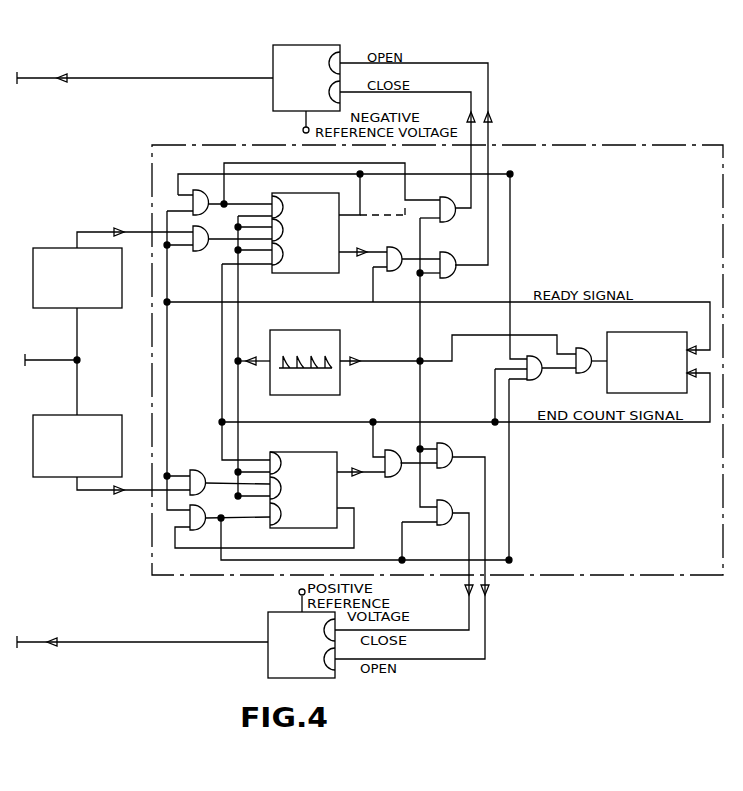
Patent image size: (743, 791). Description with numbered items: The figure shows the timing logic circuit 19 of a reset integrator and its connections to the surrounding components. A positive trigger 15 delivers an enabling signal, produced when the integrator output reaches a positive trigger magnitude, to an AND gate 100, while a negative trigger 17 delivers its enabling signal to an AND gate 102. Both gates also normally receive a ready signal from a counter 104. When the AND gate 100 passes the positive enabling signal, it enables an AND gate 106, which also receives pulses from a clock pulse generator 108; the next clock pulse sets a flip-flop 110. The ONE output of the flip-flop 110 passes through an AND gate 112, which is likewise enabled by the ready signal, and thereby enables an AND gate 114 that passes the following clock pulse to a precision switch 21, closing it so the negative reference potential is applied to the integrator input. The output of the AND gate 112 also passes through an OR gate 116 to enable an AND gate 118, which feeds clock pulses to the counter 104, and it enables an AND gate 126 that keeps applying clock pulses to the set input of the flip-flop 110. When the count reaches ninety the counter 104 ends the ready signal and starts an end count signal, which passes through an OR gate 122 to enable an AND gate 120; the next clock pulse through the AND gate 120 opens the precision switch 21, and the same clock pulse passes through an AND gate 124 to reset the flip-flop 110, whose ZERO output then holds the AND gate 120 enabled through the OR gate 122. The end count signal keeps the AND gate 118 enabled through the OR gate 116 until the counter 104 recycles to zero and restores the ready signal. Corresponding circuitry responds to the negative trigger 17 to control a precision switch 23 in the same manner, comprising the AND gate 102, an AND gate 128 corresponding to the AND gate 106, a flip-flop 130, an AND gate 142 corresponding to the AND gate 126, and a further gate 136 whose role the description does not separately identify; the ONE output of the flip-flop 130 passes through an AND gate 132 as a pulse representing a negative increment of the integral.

The positive trigger 15 is at (101, 308).
The negative trigger 17 is at (98, 420).
The timing logic circuit 19 is at (148, 550).
The precision switch 21 is at (278, 90).
The precision switch 23 is at (273, 658).
The AND gate 100 is at (219, 251).
The AND gate 102 is at (197, 470).
The counter 104 is at (645, 337).
The AND gate 106 is at (284, 232).
The clock pulse generator 108 is at (313, 390).
The flip-flop 110 is at (325, 270).
The AND gate 112 is at (219, 210).
The AND gate 114 is at (454, 213).
The OR gate 116 is at (535, 381).
The AND gate 118 is at (585, 347).
The AND gate 120 is at (448, 270).
The OR gate 122 is at (392, 269).
The AND gate 124 is at (278, 268).
The AND gate 126 is at (283, 205).
The AND gate 128 is at (276, 498).
The flip-flop 130 is at (307, 455).
The AND gate 132 is at (199, 510).
The flip-flop input 136 is at (275, 453).
The AND gate 142 is at (276, 523).